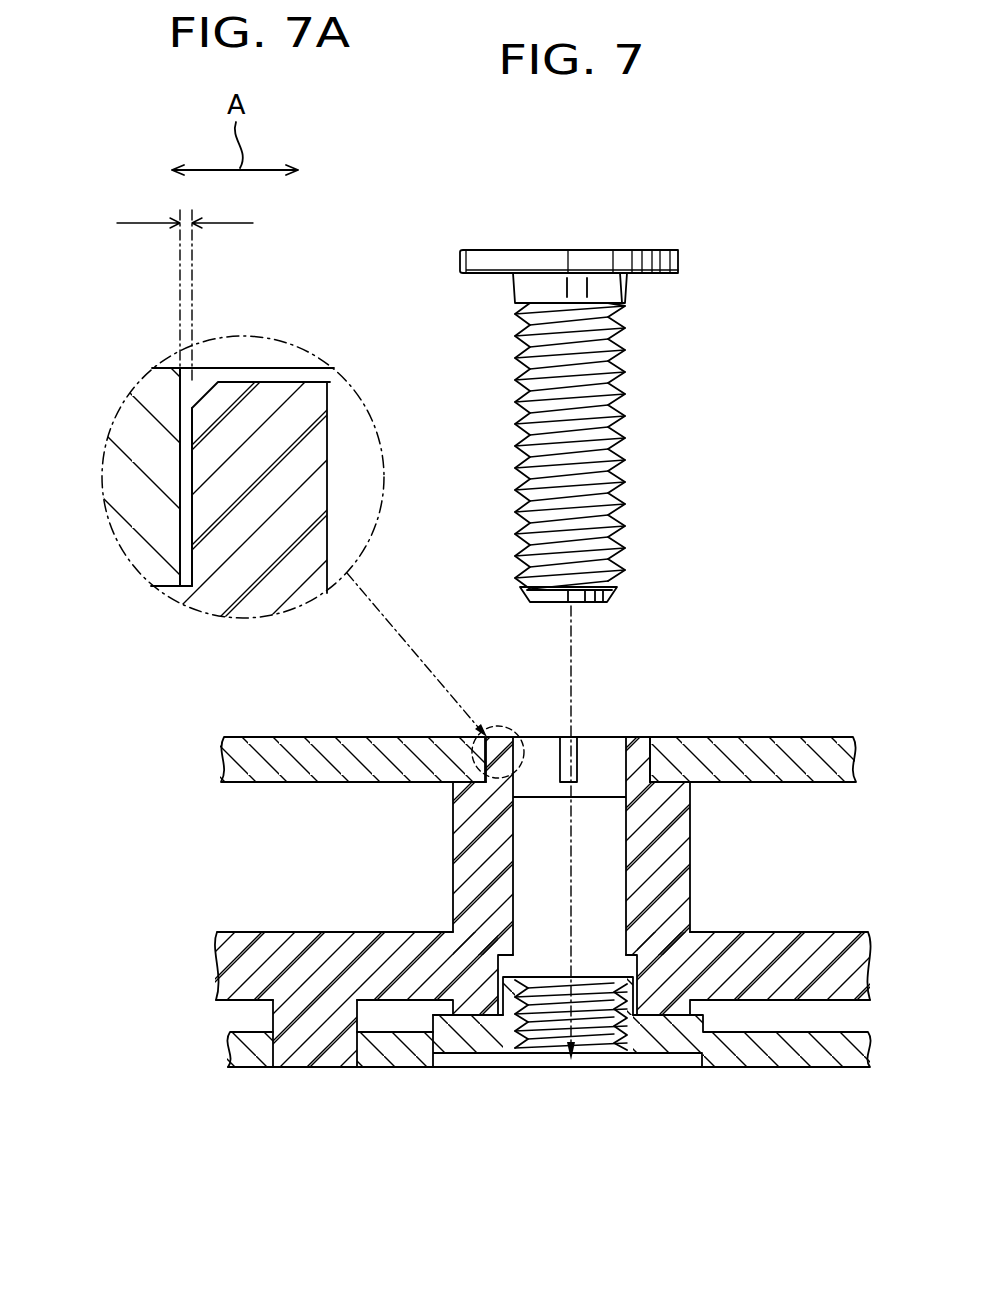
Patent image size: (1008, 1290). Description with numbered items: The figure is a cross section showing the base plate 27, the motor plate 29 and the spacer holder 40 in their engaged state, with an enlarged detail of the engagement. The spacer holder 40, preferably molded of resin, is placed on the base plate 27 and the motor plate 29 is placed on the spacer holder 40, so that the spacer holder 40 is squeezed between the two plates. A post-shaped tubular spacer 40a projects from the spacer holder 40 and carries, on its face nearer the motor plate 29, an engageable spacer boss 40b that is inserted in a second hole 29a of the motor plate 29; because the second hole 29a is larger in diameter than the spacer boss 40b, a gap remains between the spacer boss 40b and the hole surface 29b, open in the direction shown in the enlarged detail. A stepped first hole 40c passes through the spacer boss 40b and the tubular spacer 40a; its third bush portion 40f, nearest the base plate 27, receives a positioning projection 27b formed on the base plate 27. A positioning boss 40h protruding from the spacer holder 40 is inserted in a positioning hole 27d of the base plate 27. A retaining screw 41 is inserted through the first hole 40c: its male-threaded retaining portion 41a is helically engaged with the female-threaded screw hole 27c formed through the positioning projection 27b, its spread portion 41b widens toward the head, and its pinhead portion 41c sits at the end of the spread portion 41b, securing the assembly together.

In FIG. 7, the base plate 27 is at (549, 1012).
In FIG. 7, the positioning projection 27b is at (540, 975).
In FIG. 7, the screw hole 27c is at (576, 999).
In FIG. 7, the positioning hole 27d is at (278, 1070).
In FIG. 7A, the motor plate 29 is at (133, 427).
In FIG. 7, the motor plate 29 is at (795, 770).
In FIG. 7A, the second hole 29a is at (228, 370).
In FIG. 7A, the hole surface 29b is at (183, 385).
In FIG. 7, the spacer holder 40 is at (513, 866).
In FIG. 7, the tubular spacer 40a is at (670, 860).
In FIG. 7A, the spacer boss 40b is at (285, 393).
In FIG. 7, the spacer boss 40b is at (638, 752).
In FIG. 7, the first hole 40c is at (598, 846).
In FIG. 7, the third bush portion 40f is at (615, 962).
In FIG. 7, the positioning boss 40h is at (303, 1023).
In FIG. 7, the retaining screw 41 is at (624, 355).
In FIG. 7, the retaining portion 41a is at (623, 420).
In FIG. 7, the spread portion 41b is at (628, 292).
In FIG. 7, the pinhead portion 41c is at (680, 258).